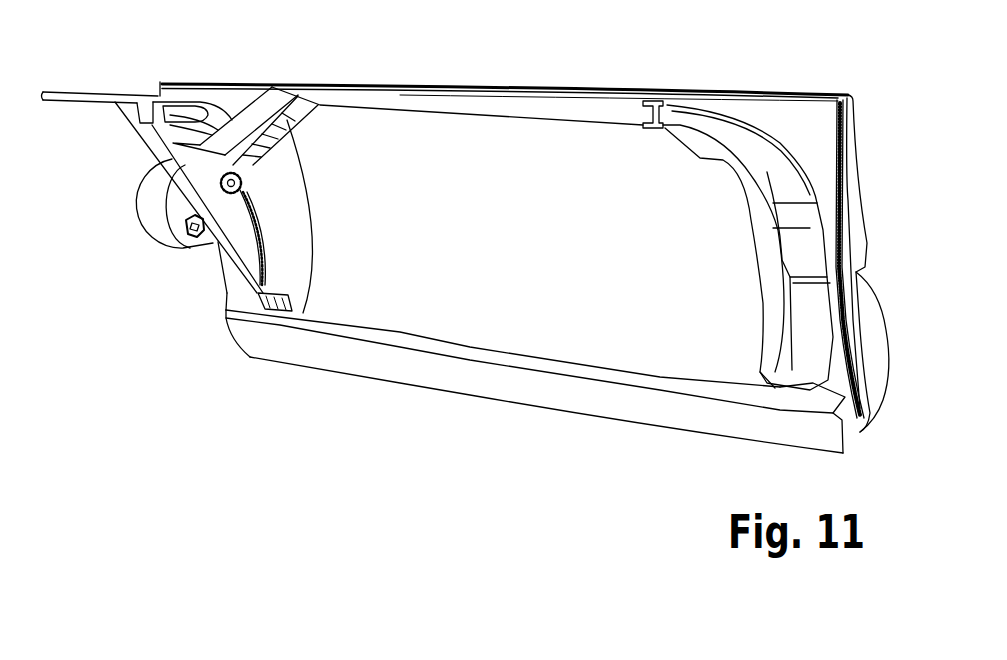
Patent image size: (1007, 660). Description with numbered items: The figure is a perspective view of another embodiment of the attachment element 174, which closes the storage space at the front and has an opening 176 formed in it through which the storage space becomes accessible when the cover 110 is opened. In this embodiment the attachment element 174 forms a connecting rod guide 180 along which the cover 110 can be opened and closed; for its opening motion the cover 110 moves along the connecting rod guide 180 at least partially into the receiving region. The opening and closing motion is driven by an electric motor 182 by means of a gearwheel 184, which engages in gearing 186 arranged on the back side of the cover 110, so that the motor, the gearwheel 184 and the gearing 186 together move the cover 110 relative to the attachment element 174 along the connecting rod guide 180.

The cover 110 is at (850, 152).
The attachment element 174 is at (86, 92).
The opening 176 is at (522, 300).
The connecting rod guide 180 is at (182, 112).
The electric motor 182 is at (155, 224).
The gearwheel 184 is at (227, 274).
The gearing 186 is at (226, 296).